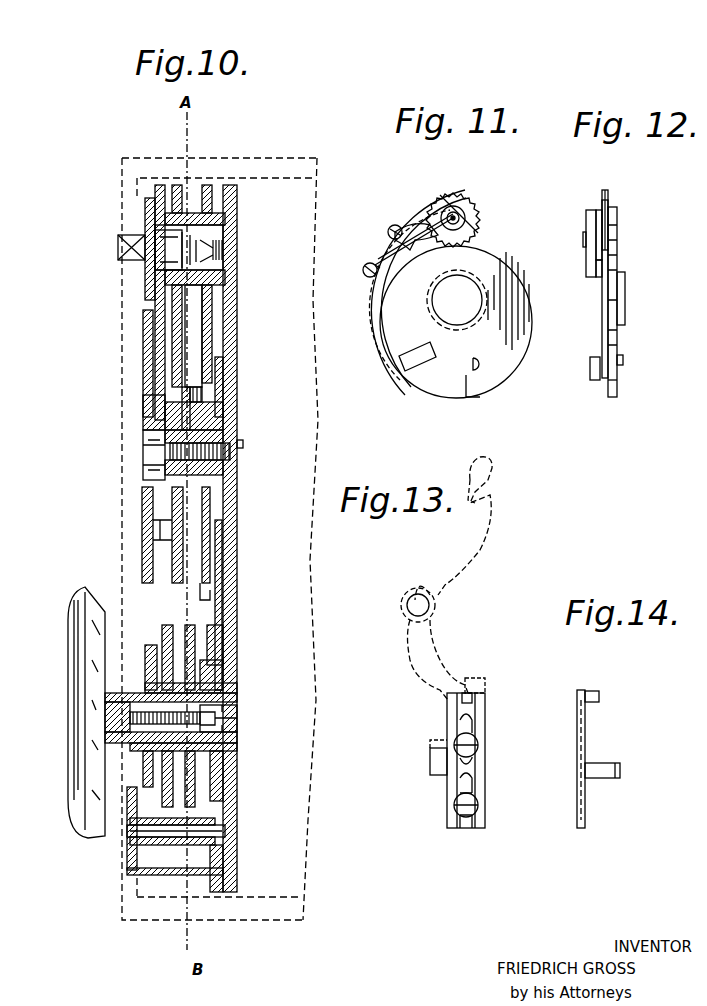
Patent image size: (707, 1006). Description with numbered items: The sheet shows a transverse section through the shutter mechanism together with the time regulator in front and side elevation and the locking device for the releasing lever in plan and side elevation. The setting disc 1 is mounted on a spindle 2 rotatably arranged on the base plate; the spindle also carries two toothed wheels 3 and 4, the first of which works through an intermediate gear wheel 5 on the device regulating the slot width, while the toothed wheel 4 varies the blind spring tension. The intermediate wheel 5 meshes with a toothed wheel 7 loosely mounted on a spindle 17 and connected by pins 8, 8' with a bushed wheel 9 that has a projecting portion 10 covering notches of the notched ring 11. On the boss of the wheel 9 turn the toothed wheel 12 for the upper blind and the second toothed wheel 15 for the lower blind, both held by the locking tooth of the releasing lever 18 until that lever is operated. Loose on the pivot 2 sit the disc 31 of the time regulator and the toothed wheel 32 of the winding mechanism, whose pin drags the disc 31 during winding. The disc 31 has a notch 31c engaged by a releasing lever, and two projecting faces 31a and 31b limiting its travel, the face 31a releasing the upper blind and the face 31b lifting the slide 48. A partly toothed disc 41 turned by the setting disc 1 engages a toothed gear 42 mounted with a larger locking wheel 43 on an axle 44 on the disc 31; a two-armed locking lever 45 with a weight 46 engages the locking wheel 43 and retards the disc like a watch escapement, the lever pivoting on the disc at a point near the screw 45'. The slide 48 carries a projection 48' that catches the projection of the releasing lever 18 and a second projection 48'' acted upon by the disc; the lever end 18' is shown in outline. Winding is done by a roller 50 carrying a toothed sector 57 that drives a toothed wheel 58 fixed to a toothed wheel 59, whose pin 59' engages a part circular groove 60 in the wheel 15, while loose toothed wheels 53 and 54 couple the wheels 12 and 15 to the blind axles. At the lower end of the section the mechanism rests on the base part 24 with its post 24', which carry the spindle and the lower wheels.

In FIG. 10, the disc 1 is at (85, 668).
In FIG. 10, the spindle 2 is at (222, 720).
In FIG. 10, the toothed wheel 3 is at (220, 652).
In FIG. 10, the toothed wheel 4 is at (225, 636).
In FIG. 10, the intermediate gear wheel 5 is at (222, 572).
In FIG. 10, the toothed wheel 7 is at (218, 372).
In FIG. 10, the pin 8 is at (211, 444).
In FIG. 10, the pin 8' is at (215, 470).
In FIG. 10, the bushed wheel 9 is at (212, 410).
In FIG. 10, the projecting portion 10 is at (185, 390).
In FIG. 10, the notched ring 11 is at (200, 393).
In FIG. 10, the toothed wheel 12 is at (207, 335).
In FIG. 10, the second toothed wheel 15 is at (177, 340).
In FIG. 10, the spindle 17 is at (150, 445).
In FIG. 13, the releasing lever 18 is at (455, 578).
In FIG. 13, the lever end 18' is at (496, 479).
In FIG. 10, the base plate 24 is at (199, 868).
In FIG. 10, the base post 24' is at (103, 830).
In FIG. 10, the disc 31 is at (175, 623).
In FIG. 11, the disc 31 is at (530, 300).
In FIG. 12, the disc 31 is at (618, 238).
In FIG. 11, the projecting face 31a is at (470, 205).
In FIG. 12, the projecting face 31a is at (618, 213).
In FIG. 11, the projecting face 31b is at (476, 388).
In FIG. 12, the projecting face 31b is at (618, 392).
In FIG. 11, the notch 31c is at (432, 203).
In FIG. 10, the toothed wheel 32 is at (197, 628).
In FIG. 10, the disc 41 is at (150, 643).
In FIG. 11, the toothed gear 42 is at (462, 230).
In FIG. 12, the toothed gear 42 is at (598, 210).
In FIG. 11, the locking wheel 43 is at (480, 220).
In FIG. 12, the locking wheel 43 is at (610, 192).
In FIG. 11, the axle 44 is at (458, 212).
In FIG. 12, the axle 44 is at (586, 215).
In FIG. 11, the two-armed locking lever 45 is at (413, 205).
In FIG. 12, the two-armed locking lever 45 is at (587, 289).
In FIG. 11, the pawl screw 45' is at (353, 282).
In FIG. 12, the pawl screw 45' is at (579, 273).
In FIG. 11, the weight 46 is at (410, 372).
In FIG. 12, the weight 46 is at (592, 378).
In FIG. 13, the slide 48 is at (484, 760).
In FIG. 14, the slide 48 is at (604, 759).
In FIG. 13, the projection 48' is at (495, 693).
In FIG. 14, the projection 48' is at (613, 695).
In FIG. 14, the bracket pin 48'' is at (630, 774).
In FIG. 10, the roller 50 is at (150, 258).
In FIG. 10, the loose toothed wheel 53 is at (207, 183).
In FIG. 10, the loose toothed wheel 54 is at (177, 183).
In FIG. 10, the toothed sector 57 is at (150, 190).
In FIG. 10, the toothed wheel 58 is at (150, 405).
In FIG. 10, the toothed wheel 59 is at (120, 363).
In FIG. 10, the pin 59' is at (118, 535).
In FIG. 10, the part circular groove 60 is at (172, 530).